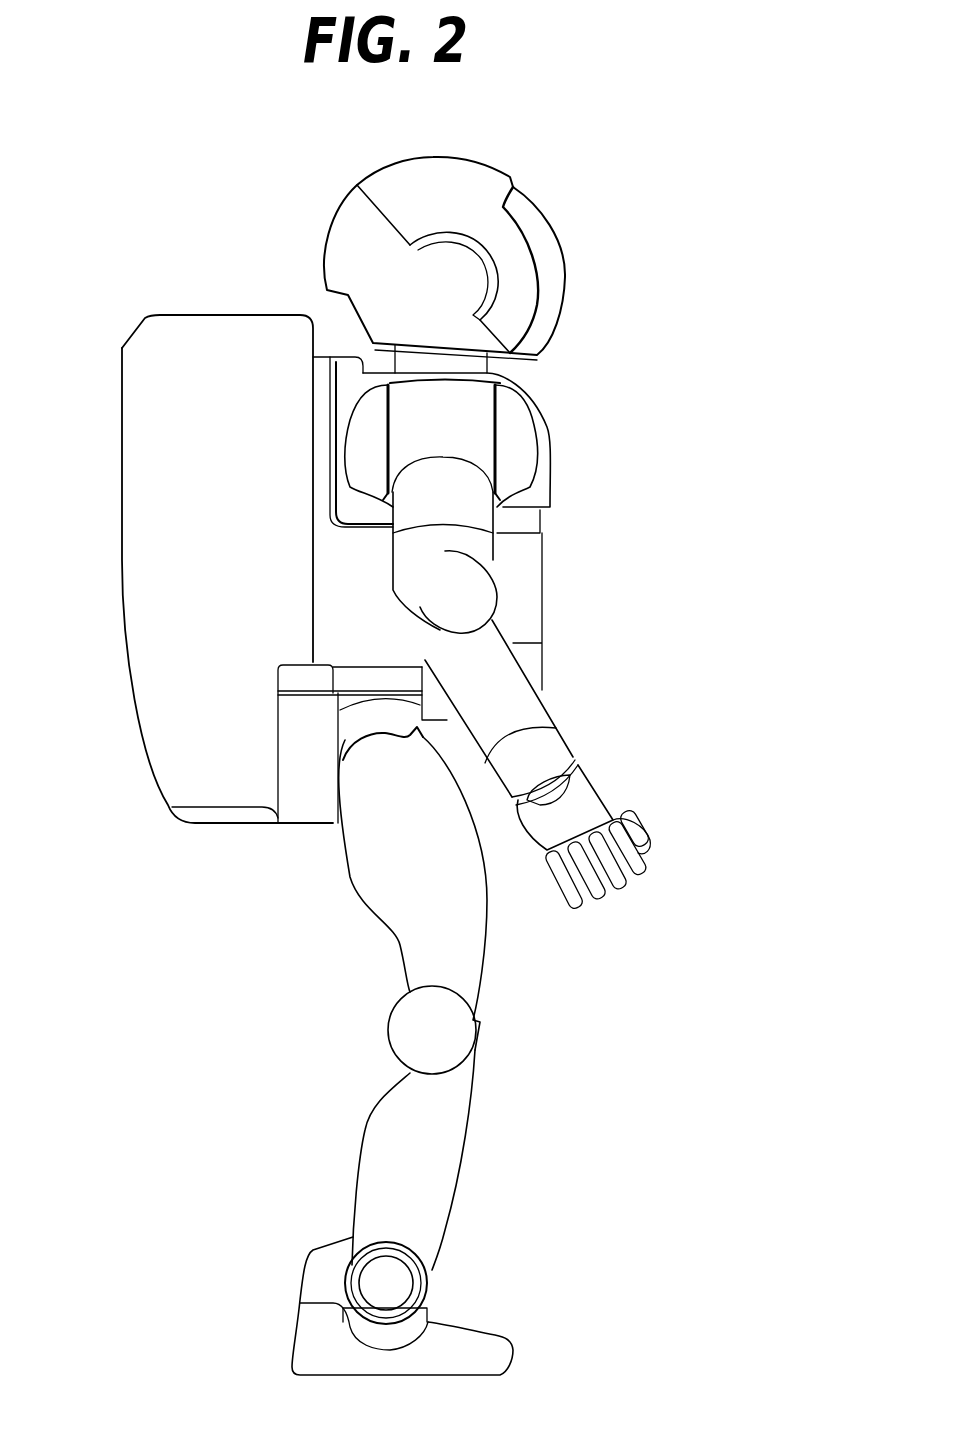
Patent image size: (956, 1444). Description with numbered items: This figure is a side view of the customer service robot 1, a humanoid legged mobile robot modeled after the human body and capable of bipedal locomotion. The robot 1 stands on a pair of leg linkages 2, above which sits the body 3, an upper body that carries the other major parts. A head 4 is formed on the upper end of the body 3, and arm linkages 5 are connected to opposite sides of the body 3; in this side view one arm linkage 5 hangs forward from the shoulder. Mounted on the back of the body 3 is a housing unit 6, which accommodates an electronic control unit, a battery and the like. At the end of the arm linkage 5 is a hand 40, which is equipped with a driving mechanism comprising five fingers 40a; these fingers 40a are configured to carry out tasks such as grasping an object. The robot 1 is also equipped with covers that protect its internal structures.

The customer service robot 1 is at (600, 430).
The leg linkage 2 is at (510, 1040).
The body 3 is at (515, 583).
The head 4 is at (398, 157).
The arm linkage 5 is at (570, 706).
The housing unit 6 is at (182, 313).
The hand 40 is at (610, 780).
The finger 40a is at (648, 860).